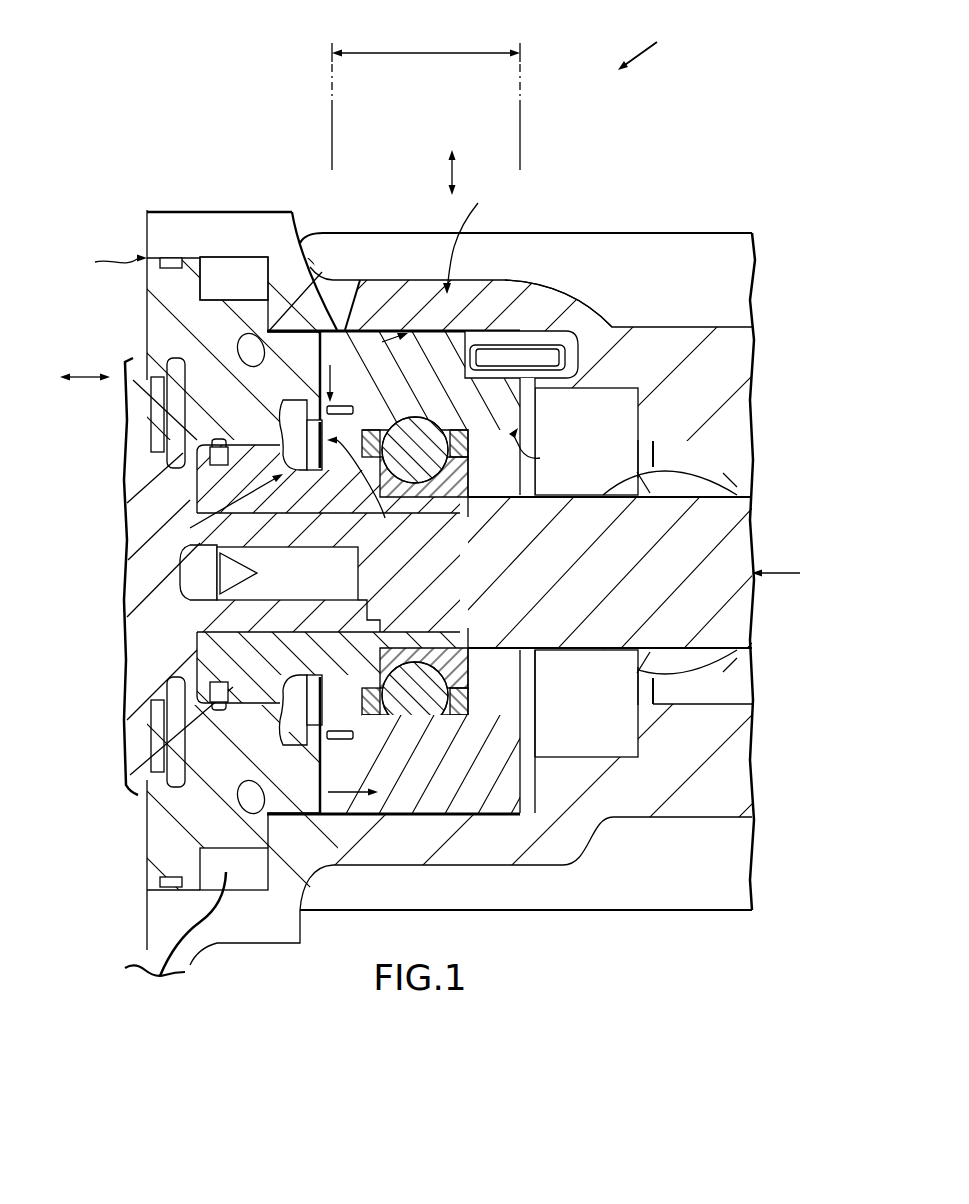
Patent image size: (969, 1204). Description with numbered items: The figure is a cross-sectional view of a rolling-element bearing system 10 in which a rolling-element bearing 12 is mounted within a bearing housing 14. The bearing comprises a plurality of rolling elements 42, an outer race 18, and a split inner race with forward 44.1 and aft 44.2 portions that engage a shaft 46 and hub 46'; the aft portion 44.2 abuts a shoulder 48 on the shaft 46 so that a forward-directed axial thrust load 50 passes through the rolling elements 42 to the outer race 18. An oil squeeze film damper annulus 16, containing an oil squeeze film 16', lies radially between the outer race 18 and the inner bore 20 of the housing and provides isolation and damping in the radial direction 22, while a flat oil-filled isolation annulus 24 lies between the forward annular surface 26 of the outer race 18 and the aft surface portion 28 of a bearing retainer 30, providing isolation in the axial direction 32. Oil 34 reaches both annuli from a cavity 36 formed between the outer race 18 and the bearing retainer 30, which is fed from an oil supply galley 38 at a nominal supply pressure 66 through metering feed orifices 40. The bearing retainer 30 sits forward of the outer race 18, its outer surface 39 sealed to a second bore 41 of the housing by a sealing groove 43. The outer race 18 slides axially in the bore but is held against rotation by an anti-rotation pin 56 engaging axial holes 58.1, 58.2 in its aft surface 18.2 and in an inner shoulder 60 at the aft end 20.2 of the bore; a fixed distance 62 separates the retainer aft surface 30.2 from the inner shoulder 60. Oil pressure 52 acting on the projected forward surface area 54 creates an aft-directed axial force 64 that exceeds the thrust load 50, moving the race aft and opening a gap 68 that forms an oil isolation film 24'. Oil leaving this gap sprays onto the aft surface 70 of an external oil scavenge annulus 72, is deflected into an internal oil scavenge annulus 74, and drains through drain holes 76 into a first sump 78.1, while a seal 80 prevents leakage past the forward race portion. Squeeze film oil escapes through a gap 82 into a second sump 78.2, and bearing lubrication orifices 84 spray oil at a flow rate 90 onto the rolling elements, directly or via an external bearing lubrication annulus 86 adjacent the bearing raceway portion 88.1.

The rolling-element bearing system 10 is at (651, 44).
The rolling-element bearing 12 is at (484, 500).
The bearing housing 14 is at (576, 290).
The oil squeeze film damper annulus 16 is at (384, 344).
The oil squeeze film 16' is at (500, 314).
The outer race 18 is at (393, 336).
The aft surface 18.2 is at (523, 407).
The inner bore 20 is at (370, 330).
The aft end 20.2 is at (535, 316).
The radial direction 22 is at (455, 178).
The oil-filled isolation annulus 24 is at (338, 374).
The oil isolation film 24' is at (252, 423).
The forward annular surface 26 is at (352, 411).
The aft surface portion 28 is at (322, 413).
The bearing retainer 30 is at (147, 296).
The aft surface 30.2 is at (332, 70).
The axial direction 32 is at (80, 377).
The oil 34 is at (292, 212).
The cavity 36 is at (232, 257).
The oil supply galley 38 is at (672, 250).
The outer surface 39 is at (106, 263).
The feed orifices 40 is at (337, 330).
The second bore 41 is at (200, 257).
The rolling elements 42 is at (430, 456).
The sealing groove 43 is at (168, 258).
The forward portion of split inner race 44.1 is at (200, 503).
The aft portion of split inner race 44.2 is at (443, 518).
The shaft 46 is at (597, 572).
The hub 46' is at (99, 576).
The shoulder 48 is at (468, 500).
The forward-directed axial thrust load 50 is at (777, 575).
The pressure 52 is at (333, 782).
The projected forward surface area 54 is at (392, 358).
The anti-rotation pin 56 is at (508, 369).
The axial hole 58.1 is at (488, 378).
The axial hole 58.2 is at (550, 376).
The inner shoulder 60 is at (520, 56).
The fixed distance 62 is at (432, 52).
The aft-directed axial force 64 is at (345, 795).
The nominal supply pressure 66 is at (660, 292).
The gap 68 is at (484, 500).
The aft surface 70 is at (313, 460).
The external oil scavenge annulus 72 is at (271, 553).
The internal oil scavenge annulus 74 is at (280, 410).
The drain holes 76 is at (240, 345).
The first sump 78.1 is at (160, 976).
The second sump 78.2 is at (560, 736).
The seal 80 is at (213, 447).
The gap 82 is at (539, 448).
The bearing lubrication orifices 84 is at (353, 720).
The external bearing lubrication annulus 86 is at (313, 675).
The bearing raceway portion 88.1 is at (402, 640).
The flow rate 90 is at (283, 830).